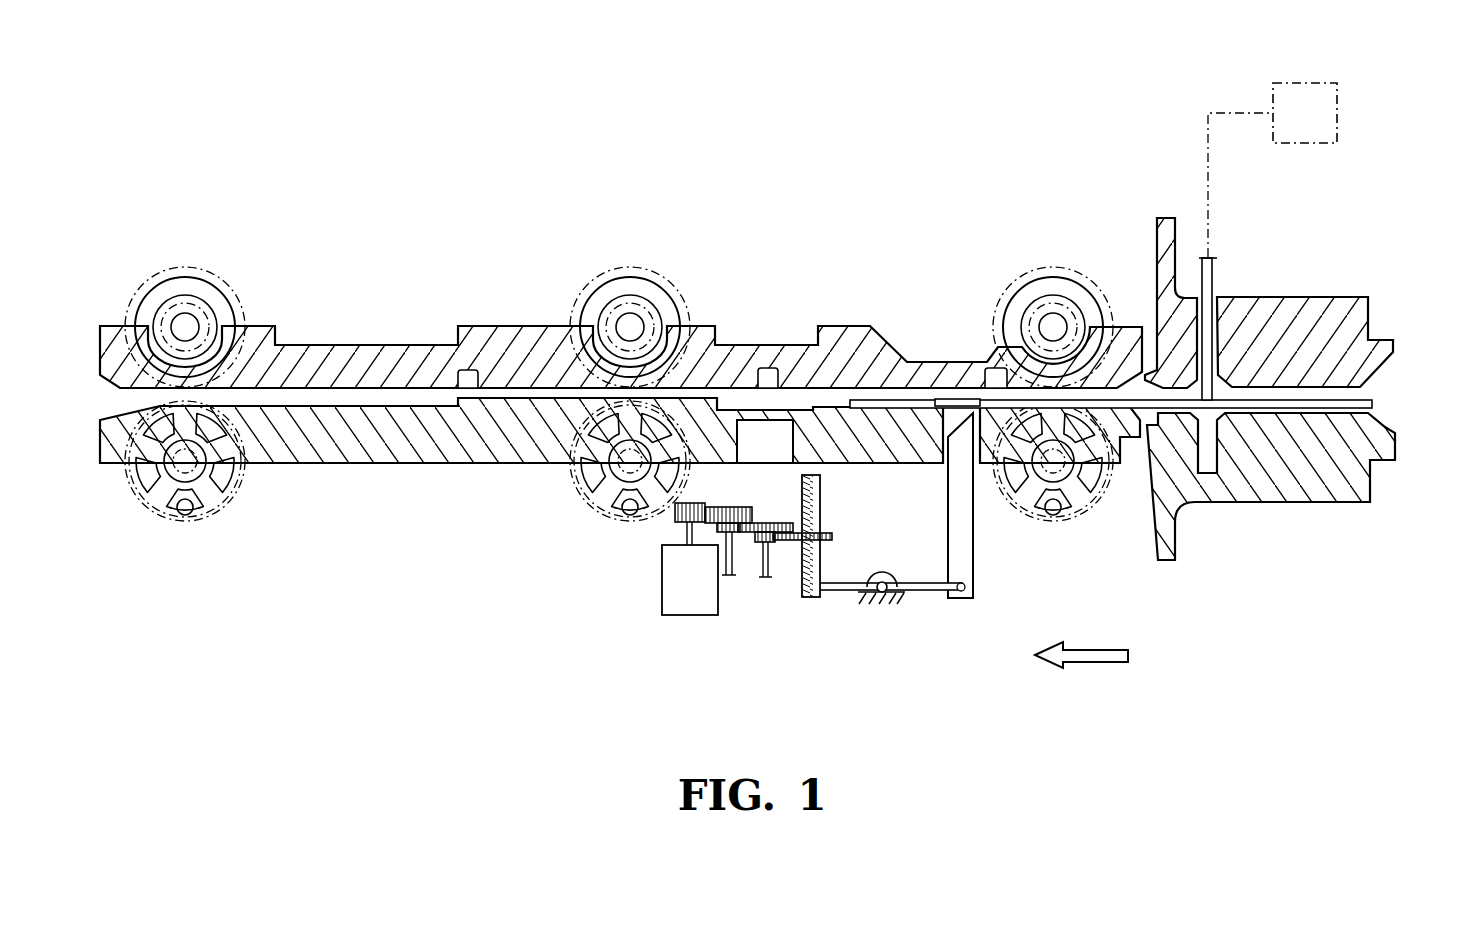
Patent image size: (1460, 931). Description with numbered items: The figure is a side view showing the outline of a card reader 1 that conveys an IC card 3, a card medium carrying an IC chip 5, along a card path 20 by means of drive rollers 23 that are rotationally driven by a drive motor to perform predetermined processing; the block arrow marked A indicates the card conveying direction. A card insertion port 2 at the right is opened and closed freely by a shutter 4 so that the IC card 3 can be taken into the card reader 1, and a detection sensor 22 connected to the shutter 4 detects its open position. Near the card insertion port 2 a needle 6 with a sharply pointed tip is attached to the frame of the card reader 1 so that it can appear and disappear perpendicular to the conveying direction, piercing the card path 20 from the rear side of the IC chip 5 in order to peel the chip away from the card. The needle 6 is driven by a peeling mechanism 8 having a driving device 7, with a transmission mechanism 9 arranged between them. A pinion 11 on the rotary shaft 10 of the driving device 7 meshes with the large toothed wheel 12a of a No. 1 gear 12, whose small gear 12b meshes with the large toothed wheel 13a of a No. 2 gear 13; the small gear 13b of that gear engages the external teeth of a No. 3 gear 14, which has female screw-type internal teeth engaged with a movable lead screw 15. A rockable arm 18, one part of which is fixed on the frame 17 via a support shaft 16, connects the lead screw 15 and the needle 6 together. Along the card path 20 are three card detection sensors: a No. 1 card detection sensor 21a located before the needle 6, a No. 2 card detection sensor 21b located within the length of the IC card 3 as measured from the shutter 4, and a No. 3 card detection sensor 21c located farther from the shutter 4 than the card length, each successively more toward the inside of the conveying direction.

The card reader 1 is at (769, 416).
The card insertion port 2 is at (1386, 430).
The IC card 3 is at (1132, 406).
The shutter 4 is at (1214, 282).
The IC chip 5 is at (956, 399).
The needle 6 is at (962, 555).
The driving device 7 is at (662, 600).
The peeling mechanism 8 is at (743, 626).
The transmission mechanism 9 is at (785, 628).
The rotary shaft 10 is at (660, 545).
The pinion 11 is at (683, 538).
The No. 1 gear 12 is at (721, 607).
The large toothed wheel 12a is at (702, 521).
The small gear 12b is at (710, 523).
The No. 2 gear 13 is at (820, 615).
The large toothed wheel 13a is at (743, 531).
The small gear 13b is at (767, 534).
The No. 3 gear 14 is at (832, 534).
The lead screw 15 is at (822, 566).
The support shaft 16 is at (890, 582).
The frame 17 is at (897, 604).
The rockable arm 18 is at (944, 594).
The card path 20 is at (1398, 384).
The No. 1 card detection sensor 21a is at (992, 370).
The No. 2 card detection sensor 21b is at (776, 368).
The No. 3 card detection sensor 21c is at (455, 372).
The detection sensor 22 is at (1320, 145).
The drive roller 23 is at (238, 297).